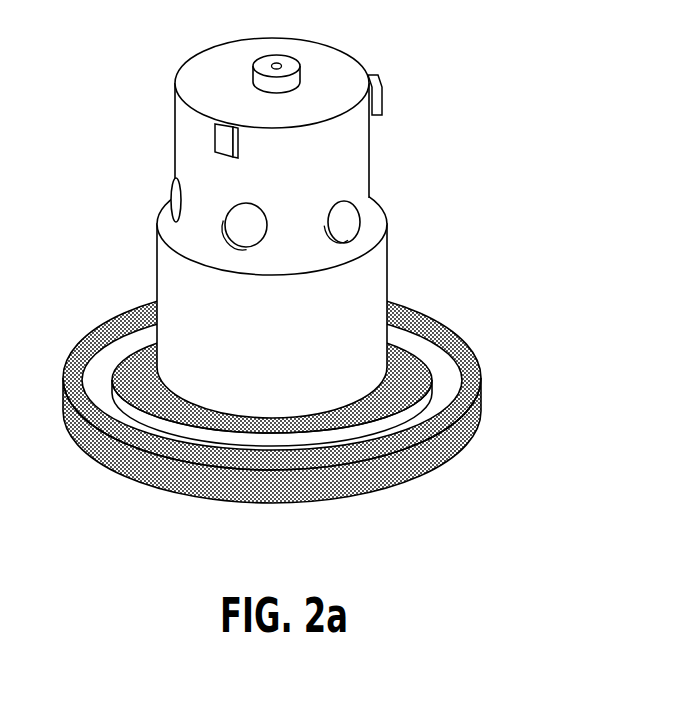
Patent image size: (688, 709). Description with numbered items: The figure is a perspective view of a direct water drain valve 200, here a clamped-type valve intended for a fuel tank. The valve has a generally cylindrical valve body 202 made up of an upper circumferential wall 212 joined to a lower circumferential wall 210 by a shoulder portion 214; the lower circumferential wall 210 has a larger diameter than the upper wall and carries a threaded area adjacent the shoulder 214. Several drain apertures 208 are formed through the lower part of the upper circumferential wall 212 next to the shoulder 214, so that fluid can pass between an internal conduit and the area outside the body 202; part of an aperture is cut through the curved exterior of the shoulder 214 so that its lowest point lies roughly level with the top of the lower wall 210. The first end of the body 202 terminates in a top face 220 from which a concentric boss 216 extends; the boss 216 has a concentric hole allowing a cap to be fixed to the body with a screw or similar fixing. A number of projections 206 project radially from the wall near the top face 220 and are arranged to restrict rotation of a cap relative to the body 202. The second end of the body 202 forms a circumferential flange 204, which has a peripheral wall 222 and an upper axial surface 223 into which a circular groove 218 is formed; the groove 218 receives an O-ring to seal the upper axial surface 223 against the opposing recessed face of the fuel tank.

The direct water drain valve 200 is at (504, 93).
The valve body 202 is at (321, 209).
The circumferential flange 204 is at (288, 421).
The projections 206 is at (223, 46).
The drain apertures 208 is at (344, 230).
The lower circumferential wall 210 is at (389, 297).
The upper circumferential wall 212 is at (373, 165).
The shoulder portion 214 is at (384, 205).
The concentric boss 216 is at (287, 57).
The circular groove 218 is at (91, 376).
The top face 220 is at (340, 62).
The peripheral wall 222 is at (456, 454).
The upper axial surface 223 is at (472, 383).